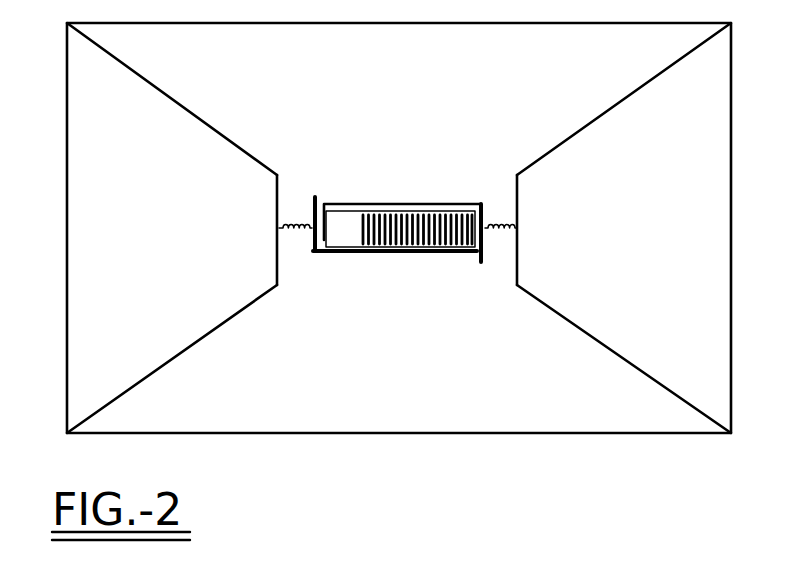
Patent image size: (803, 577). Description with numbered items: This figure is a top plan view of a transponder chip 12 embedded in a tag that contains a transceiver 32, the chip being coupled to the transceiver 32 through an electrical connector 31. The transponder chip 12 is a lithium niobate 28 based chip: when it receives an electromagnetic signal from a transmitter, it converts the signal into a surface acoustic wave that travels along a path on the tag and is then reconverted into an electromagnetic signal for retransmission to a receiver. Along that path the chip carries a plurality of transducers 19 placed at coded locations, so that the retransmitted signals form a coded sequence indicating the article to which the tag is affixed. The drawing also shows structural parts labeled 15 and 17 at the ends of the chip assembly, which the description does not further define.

The transponder chip 12 is at (408, 248).
The mounting bracket 15 is at (317, 198).
The end plate 17 is at (484, 258).
The transducers 19 is at (408, 243).
The lithium niobate 28 is at (342, 238).
The electrical connector 31 is at (296, 222).
The transceiver 32 is at (195, 115).